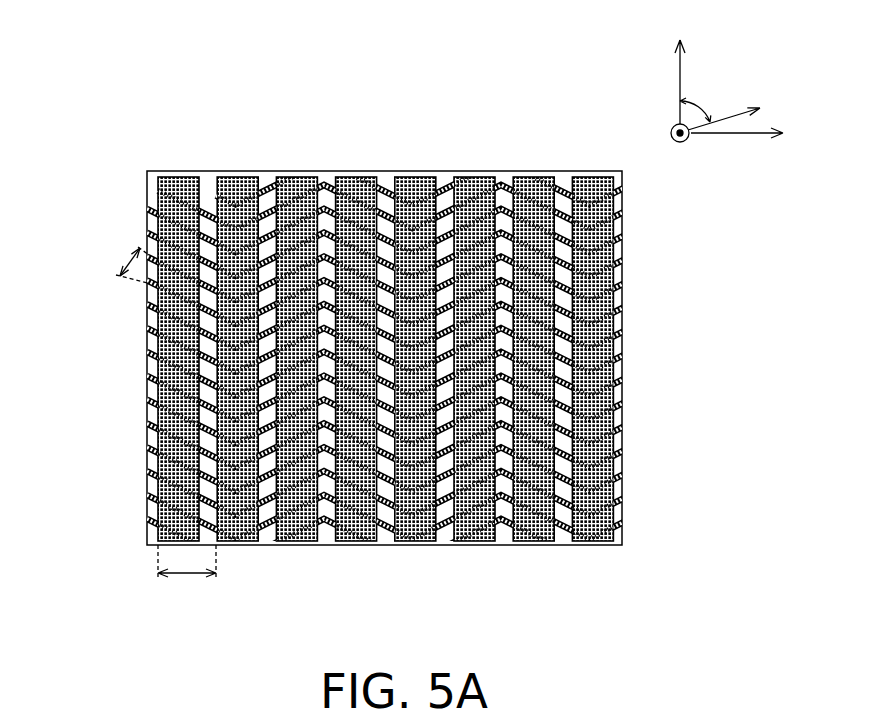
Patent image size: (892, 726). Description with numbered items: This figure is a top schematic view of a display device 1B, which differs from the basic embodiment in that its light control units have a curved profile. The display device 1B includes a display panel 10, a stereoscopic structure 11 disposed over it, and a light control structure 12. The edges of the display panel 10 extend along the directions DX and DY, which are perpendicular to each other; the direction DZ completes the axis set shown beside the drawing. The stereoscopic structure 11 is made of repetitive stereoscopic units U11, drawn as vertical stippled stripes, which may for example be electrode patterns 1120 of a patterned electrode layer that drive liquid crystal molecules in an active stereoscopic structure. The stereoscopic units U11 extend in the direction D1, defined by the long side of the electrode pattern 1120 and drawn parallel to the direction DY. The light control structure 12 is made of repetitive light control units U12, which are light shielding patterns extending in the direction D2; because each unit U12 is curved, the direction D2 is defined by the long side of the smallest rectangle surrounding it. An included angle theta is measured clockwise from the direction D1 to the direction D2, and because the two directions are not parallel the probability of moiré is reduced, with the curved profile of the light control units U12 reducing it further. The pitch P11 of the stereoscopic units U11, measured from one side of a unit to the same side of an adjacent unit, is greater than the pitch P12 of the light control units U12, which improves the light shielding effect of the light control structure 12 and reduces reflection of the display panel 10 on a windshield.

The display panel 10 is at (147, 165).
The stereoscopic structure 11 is at (385, 314).
The stereoscopic unit U11 is at (385, 330).
The electrode pattern 1120 is at (172, 180).
The light control structure 12 is at (374, 362).
The light control unit U12 is at (140, 208).
The pitch of the light control units P12 is at (117, 260).
The pitch of the stereoscopic units P11 is at (187, 578).
The extension direction of the stereoscopic unit D1 is at (682, 66).
The direction DY is at (682, 66).
The extension direction of the light control unit D2 is at (735, 103).
The direction DX is at (753, 132).
The direction DZ is at (680, 151).
The display device 1B is at (688, 587).